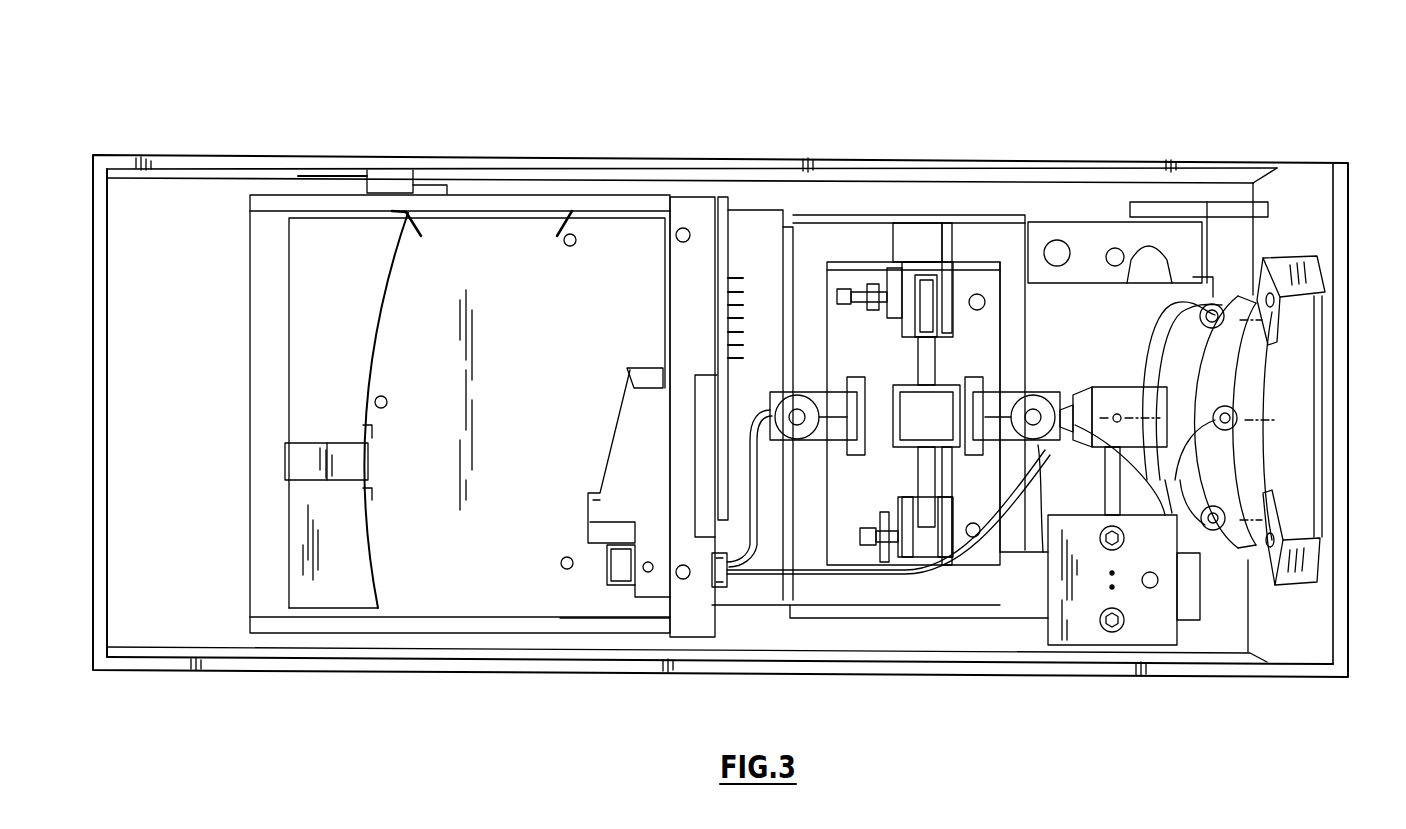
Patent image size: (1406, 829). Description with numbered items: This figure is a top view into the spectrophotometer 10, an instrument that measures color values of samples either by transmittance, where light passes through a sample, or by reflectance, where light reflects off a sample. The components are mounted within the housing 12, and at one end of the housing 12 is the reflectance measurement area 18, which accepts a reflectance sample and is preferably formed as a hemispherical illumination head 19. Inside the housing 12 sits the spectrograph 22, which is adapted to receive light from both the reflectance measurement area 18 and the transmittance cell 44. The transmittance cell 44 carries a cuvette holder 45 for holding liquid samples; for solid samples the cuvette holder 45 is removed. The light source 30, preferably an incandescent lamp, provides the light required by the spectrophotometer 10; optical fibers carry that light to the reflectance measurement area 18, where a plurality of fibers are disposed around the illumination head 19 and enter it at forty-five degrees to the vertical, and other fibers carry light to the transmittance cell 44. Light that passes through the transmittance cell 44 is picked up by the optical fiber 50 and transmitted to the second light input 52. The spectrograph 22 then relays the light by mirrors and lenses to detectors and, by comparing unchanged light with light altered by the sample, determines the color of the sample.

The spectrophotometer 10 is at (822, 102).
The housing 12 is at (932, 160).
The reflectance measurement area 18 is at (1350, 491).
The illumination head 19 is at (1240, 307).
The spectrograph 22 is at (493, 265).
The light source 30 is at (1056, 633).
The transmittance cell 44 is at (882, 408).
The cuvette holder 45 is at (940, 385).
The optical fiber 50 is at (752, 505).
The second light input 52 is at (727, 577).